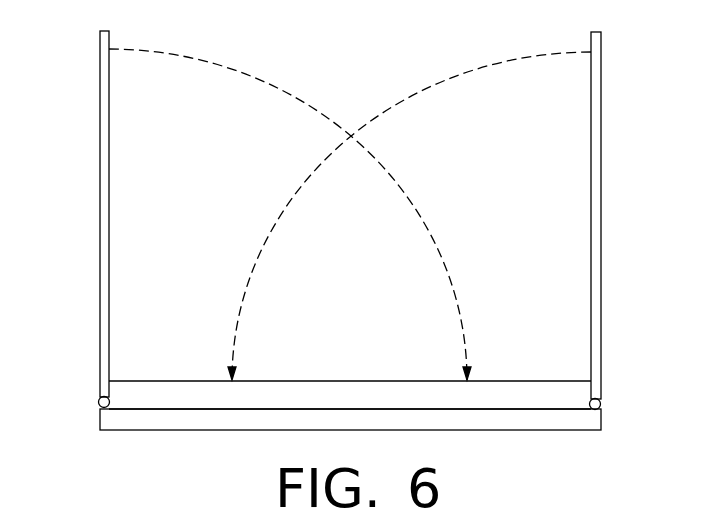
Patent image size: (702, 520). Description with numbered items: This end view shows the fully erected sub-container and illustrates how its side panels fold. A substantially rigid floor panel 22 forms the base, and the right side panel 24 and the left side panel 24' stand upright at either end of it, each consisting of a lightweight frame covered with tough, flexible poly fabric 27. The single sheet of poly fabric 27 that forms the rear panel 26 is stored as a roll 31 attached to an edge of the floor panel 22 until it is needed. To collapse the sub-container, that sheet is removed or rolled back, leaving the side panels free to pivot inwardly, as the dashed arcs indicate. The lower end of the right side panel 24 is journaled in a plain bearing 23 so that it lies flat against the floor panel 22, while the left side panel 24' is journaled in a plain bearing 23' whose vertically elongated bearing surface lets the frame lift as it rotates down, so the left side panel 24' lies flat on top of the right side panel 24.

The floor panel 22 is at (138, 431).
The plain bearing 23 is at (639, 395).
The plain bearing 23' is at (70, 388).
The right side panel 24 is at (634, 215).
The left side panel 24' is at (68, 214).
The rear panel 26 is at (359, 82).
The poly fabric 27 is at (563, 183).
The roll 31 is at (557, 390).